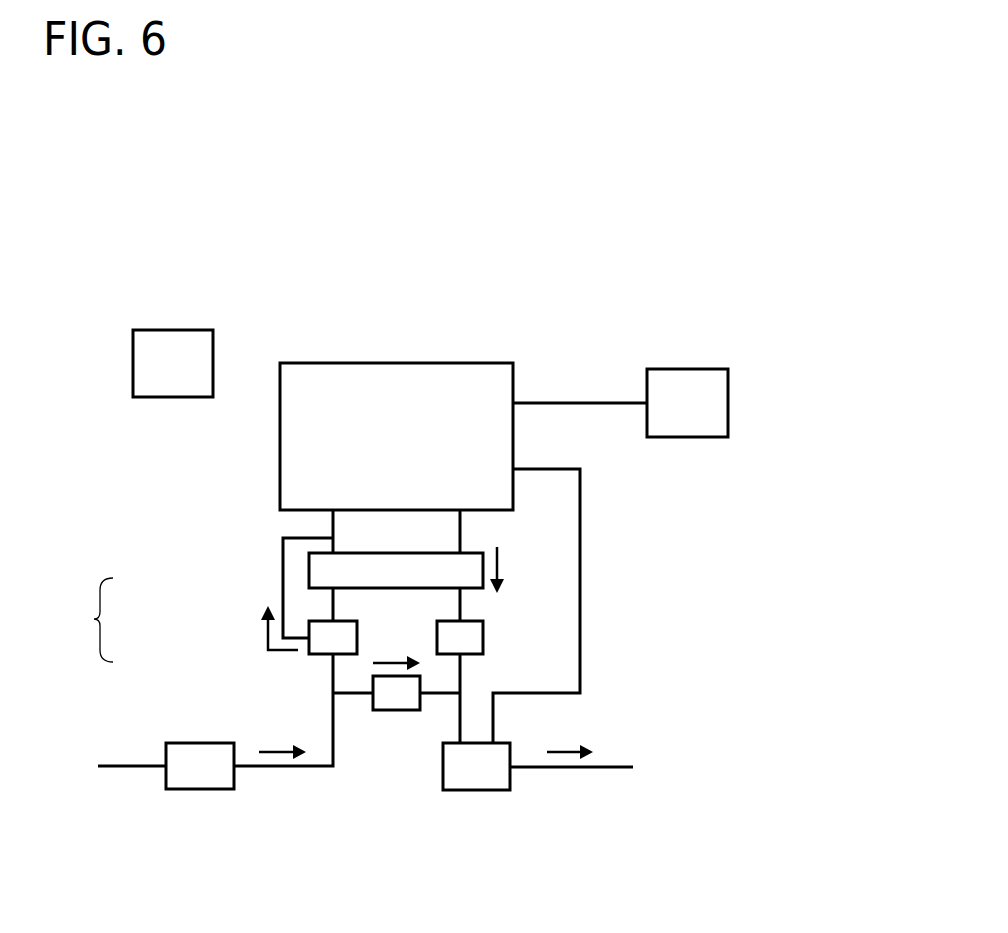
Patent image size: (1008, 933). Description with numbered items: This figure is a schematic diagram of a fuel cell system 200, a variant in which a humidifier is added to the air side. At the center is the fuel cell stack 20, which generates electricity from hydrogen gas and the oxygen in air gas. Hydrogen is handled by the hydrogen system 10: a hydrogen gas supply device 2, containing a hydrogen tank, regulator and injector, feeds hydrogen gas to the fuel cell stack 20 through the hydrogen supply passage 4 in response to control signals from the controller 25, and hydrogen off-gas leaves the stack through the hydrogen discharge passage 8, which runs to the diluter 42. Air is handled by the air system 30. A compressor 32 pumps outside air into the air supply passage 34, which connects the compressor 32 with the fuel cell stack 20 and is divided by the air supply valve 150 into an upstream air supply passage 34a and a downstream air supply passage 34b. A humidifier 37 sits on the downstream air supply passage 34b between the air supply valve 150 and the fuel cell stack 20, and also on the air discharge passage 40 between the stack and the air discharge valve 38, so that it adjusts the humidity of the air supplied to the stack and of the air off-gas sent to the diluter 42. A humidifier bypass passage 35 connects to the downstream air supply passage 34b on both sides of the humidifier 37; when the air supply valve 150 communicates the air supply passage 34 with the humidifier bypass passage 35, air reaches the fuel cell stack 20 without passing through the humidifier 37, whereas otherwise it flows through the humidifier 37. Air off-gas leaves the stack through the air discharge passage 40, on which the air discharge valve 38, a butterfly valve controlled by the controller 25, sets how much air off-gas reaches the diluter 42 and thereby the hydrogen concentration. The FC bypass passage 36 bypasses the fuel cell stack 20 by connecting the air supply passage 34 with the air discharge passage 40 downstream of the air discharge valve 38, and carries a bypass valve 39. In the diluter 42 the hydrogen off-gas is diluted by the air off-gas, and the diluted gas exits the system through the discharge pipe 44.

The fuel cell system 200 is at (697, 253).
The hydrogen system 10 is at (700, 504).
The fuel cell stack 20 is at (478, 375).
The hydrogen supply passage 4 is at (579, 400).
The hydrogen gas supply device 2 is at (702, 380).
The controller 25 is at (187, 340).
The hydrogen discharge passage 8 is at (580, 570).
The air system 30 is at (137, 560).
The air supply passage 34 is at (95, 619).
The upstream air supply passage 34a is at (253, 762).
The downstream air supply passage 34b is at (333, 522).
The compressor 32 is at (201, 780).
The humidifier bypass passage 35 is at (283, 575).
The air supply valve 150 is at (323, 648).
The humidifier 37 is at (473, 552).
The air discharge valve 38 is at (472, 637).
The air discharge passage 40 is at (462, 675).
The FC bypass passage 36 is at (442, 695).
The bypass valve 39 is at (395, 703).
The diluter 42 is at (475, 782).
The discharge pipe 44 is at (589, 770).